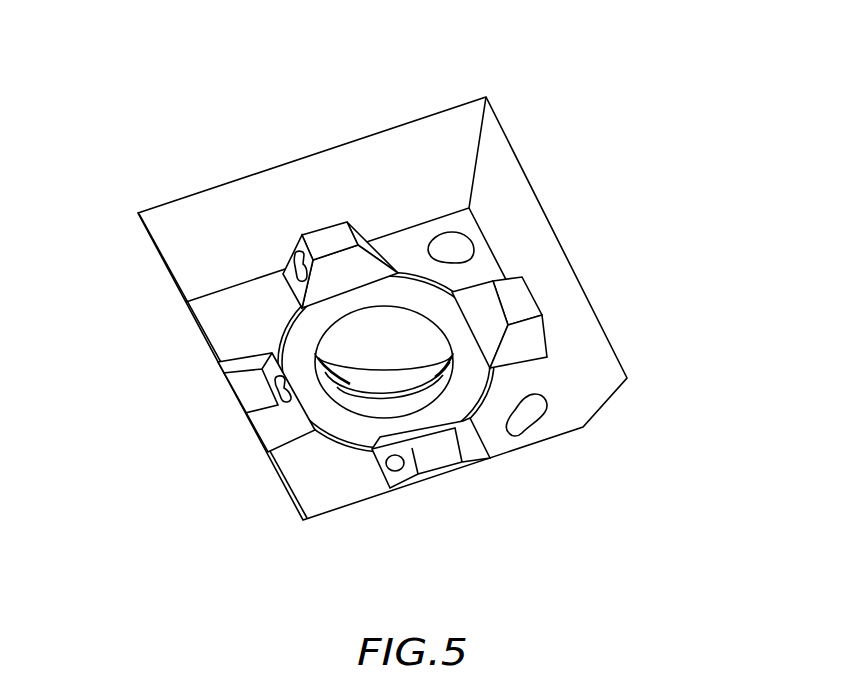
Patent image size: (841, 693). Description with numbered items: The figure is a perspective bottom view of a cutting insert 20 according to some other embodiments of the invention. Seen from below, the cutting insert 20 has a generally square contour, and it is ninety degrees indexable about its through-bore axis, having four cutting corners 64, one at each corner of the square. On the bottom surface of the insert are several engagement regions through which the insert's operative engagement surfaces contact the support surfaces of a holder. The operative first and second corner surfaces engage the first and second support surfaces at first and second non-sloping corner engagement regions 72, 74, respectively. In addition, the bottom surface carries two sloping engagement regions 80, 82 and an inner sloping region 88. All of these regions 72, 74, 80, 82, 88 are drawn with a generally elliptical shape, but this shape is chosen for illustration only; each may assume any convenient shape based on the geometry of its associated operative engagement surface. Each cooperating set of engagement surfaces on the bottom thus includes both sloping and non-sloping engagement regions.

The cutting insert 20 is at (600, 444).
The cutting corners 64 is at (498, 82).
The first non-sloping corner engagement region 72 is at (535, 405).
The second non-sloping corner engagement region 74 is at (452, 252).
The sloping engagement region 80 is at (395, 464).
The sloping engagement region 82 is at (297, 270).
The inner sloping region 88 is at (273, 378).